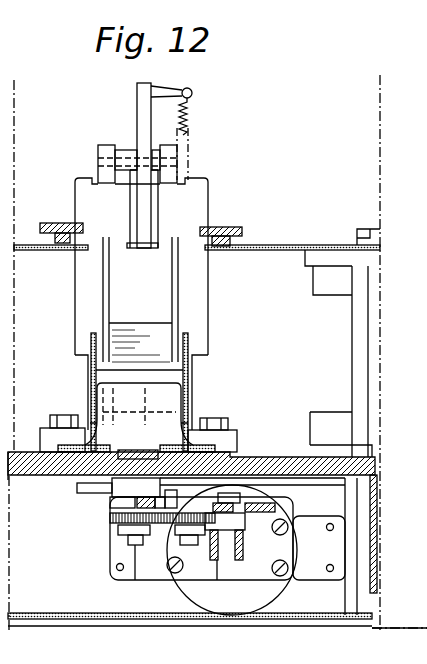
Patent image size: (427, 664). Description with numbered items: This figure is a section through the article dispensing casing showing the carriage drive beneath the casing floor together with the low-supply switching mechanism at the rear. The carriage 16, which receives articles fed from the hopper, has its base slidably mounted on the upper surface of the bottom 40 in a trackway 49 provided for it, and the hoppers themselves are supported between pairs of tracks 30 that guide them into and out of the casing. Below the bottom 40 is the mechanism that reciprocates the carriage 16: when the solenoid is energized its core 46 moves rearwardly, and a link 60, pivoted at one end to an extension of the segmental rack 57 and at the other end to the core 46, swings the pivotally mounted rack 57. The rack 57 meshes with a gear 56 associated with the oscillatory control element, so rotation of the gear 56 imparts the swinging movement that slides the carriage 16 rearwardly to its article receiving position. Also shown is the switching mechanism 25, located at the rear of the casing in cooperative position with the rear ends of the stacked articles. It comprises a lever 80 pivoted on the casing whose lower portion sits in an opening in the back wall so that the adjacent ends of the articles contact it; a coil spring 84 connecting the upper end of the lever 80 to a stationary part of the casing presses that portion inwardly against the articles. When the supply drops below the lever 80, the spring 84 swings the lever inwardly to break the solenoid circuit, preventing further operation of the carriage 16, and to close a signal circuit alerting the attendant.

The lever 80 is at (140, 118).
The coil spring 84 is at (190, 127).
The switching mechanism 25 is at (210, 198).
The tracks 30 is at (243, 208).
The carriage 16 is at (165, 402).
The bottom 40 is at (277, 465).
The trackway 49 is at (82, 473).
The gear 56 is at (110, 518).
The link 60 is at (250, 527).
The segmental rack 57 is at (178, 522).
The core 46 is at (217, 565).